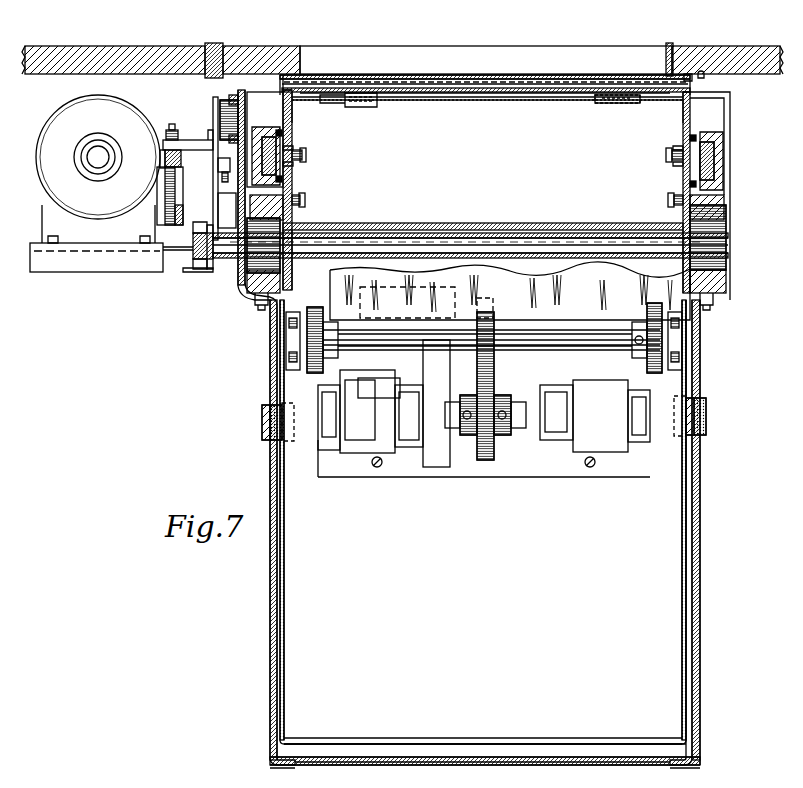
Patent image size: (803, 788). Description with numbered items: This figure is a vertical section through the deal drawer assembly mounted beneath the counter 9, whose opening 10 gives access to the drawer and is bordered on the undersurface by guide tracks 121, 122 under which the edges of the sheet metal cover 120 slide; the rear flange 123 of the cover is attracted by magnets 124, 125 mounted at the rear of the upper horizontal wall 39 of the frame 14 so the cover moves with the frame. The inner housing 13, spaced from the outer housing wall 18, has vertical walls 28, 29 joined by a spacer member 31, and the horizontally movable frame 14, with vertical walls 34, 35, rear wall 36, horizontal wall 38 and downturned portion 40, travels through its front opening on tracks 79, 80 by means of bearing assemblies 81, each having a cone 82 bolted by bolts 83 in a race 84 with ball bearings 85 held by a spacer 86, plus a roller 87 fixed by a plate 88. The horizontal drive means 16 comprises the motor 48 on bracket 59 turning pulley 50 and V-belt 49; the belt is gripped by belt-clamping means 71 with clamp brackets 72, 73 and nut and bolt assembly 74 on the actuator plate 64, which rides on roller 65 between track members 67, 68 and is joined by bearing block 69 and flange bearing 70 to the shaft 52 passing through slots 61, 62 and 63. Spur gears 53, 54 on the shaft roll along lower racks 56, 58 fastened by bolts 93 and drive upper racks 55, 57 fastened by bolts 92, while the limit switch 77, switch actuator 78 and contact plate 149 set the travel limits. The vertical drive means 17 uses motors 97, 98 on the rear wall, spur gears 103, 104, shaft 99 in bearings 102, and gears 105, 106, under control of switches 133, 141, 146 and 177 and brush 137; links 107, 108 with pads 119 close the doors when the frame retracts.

The counter 9 is at (158, 46).
The opening 10 is at (302, 48).
The inner housing 13 is at (702, 728).
The horizontally movable frame 14 is at (690, 693).
The means for moving the frame horizontally 16 is at (106, 276).
The means for moving the tray vertically 17 is at (494, 462).
The outer housing wall 18 is at (590, 123).
The vertical wall of inner housing 28 is at (240, 284).
The vertical wall of inner housing 29 is at (731, 262).
The spacer member 31 is at (373, 765).
The vertical wall of frame 34 is at (283, 570).
The vertical wall of frame 35 is at (688, 577).
The rear vertical wall 36 is at (481, 576).
The horizontal wall 38 is at (513, 228).
The upper horizontal wall 39 is at (500, 94).
The downturned portion 40 is at (571, 293).
The reversible motor 48 is at (76, 115).
The V-belt 49 is at (165, 160).
The pulley 50 is at (167, 192).
The shaft 52 is at (382, 238).
The spur gear 53 is at (290, 229).
The spur gear 54 is at (718, 241).
The gear rack 55 is at (293, 190).
The gear rack 56 is at (278, 285).
The gear rack 57 is at (718, 203).
The gear rack 58 is at (710, 282).
The bracket 59 is at (175, 249).
The horizontal slot 61 is at (292, 262).
The horizontal slot 62 is at (680, 258).
The elongated horizontal slot 63 is at (247, 258).
The actuator plate 64 is at (214, 182).
The roller 65 is at (220, 118).
The track member 67 is at (229, 97).
The track member 68 is at (229, 138).
The bearing block 69 is at (208, 262).
The flange bearing 70 is at (193, 255).
The belt-clamping means 71 is at (171, 124).
The upper clamp bracket 72 is at (190, 140).
The lower clamp bracket 73 is at (193, 168).
The clamping nut and bolt assembly 74 is at (166, 136).
The limit switch 77 is at (221, 221).
The switch actuator 78 is at (222, 178).
The horizontal track 79 is at (270, 125).
The horizontal track 80 is at (714, 130).
The bearing assembly 81 is at (295, 148).
The bearing cone 82 is at (295, 164).
The bolt 83 is at (307, 154).
The bearing race 84 is at (277, 145).
The ball bearing 85 is at (283, 134).
The channel-shaped spacer 86 is at (730, 135).
The roller 87 is at (292, 120).
The rectangular plate 88 is at (252, 147).
The bolt 92 is at (306, 200).
The bolt 93 is at (262, 308).
The reversible motor 97 is at (605, 440).
The reversible motor 98 is at (363, 440).
The shaft 99 is at (573, 347).
The bearing 102 is at (286, 355).
The spur gear 103 is at (482, 455).
The spur gear 104 is at (494, 325).
The spur gear 105 is at (312, 367).
The spur gear 106 is at (660, 368).
The link 107 is at (262, 424).
The link 108 is at (706, 416).
The pad 119 is at (288, 430).
The cover 120 is at (455, 76).
The guide track 121 is at (283, 46).
The guide track 122 is at (694, 76).
The downturned flange 123 is at (446, 101).
The magnet 124 is at (369, 103).
The magnet 125 is at (621, 104).
The limit switch 133 is at (388, 398).
The brush 137 is at (650, 320).
The switch 141 is at (428, 338).
The limit switch 146 is at (378, 336).
The contact plate 149 is at (198, 273).
The limit switch 177 is at (443, 390).